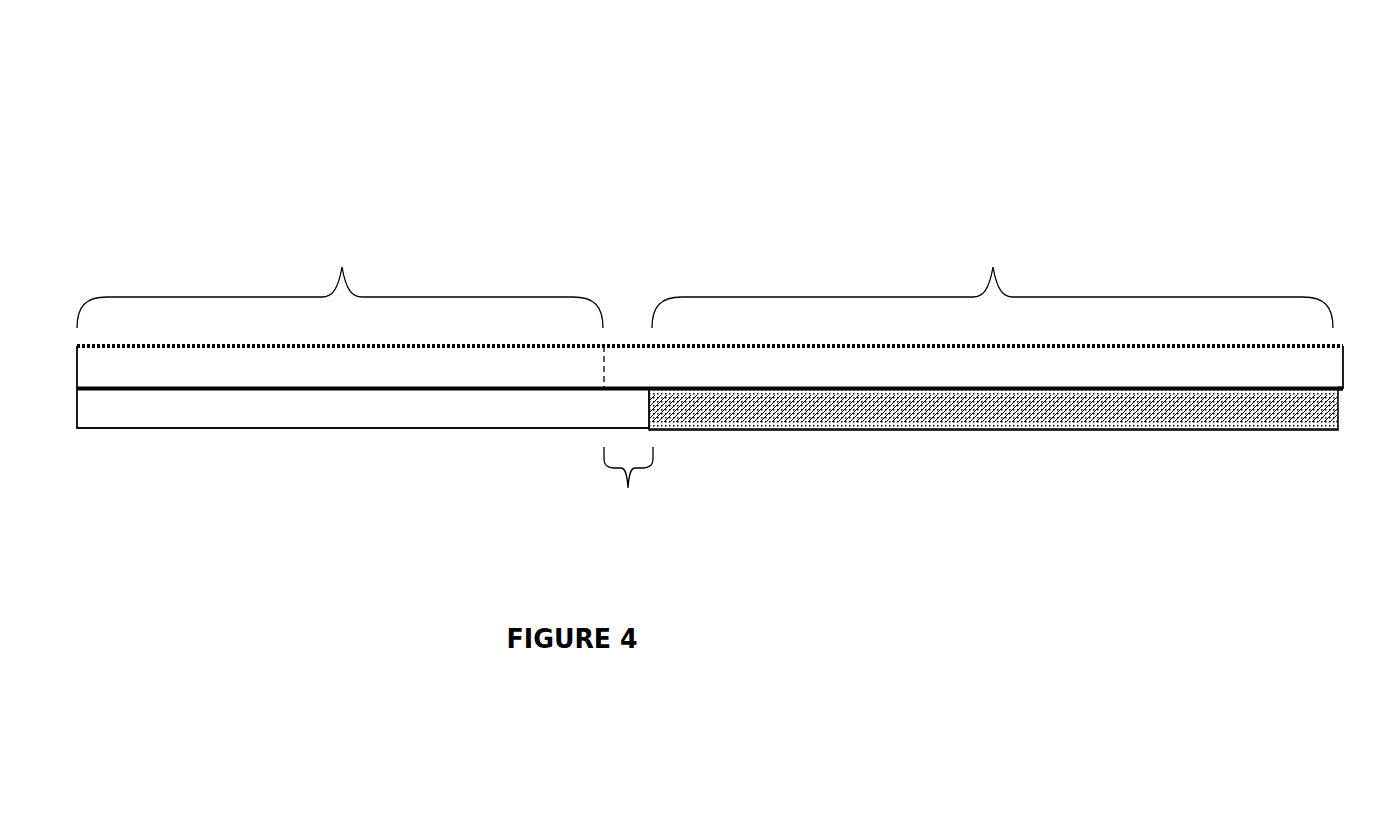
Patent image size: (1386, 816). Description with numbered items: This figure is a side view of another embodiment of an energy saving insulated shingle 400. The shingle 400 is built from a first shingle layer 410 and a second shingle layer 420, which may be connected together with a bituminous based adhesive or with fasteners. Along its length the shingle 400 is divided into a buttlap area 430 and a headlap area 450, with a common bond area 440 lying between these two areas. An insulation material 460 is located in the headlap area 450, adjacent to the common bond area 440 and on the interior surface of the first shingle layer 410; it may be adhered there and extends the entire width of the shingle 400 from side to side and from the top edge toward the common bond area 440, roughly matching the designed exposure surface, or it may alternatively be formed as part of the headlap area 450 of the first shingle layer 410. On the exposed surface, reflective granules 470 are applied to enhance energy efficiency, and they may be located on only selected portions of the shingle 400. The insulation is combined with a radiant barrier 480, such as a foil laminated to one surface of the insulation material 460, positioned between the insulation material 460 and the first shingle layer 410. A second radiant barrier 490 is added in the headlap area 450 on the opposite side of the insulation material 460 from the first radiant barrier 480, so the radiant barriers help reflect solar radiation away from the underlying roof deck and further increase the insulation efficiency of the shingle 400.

The energy saving insulated shingle 400 is at (717, 187).
The first shingle layer 410 is at (158, 367).
The second shingle layer 420 is at (350, 407).
The buttlap area 430 is at (340, 263).
The common bond area 440 is at (620, 489).
The headlap area 450 is at (992, 277).
The insulation material 460 is at (877, 408).
The reflective granules 470 is at (626, 345).
The radiant barrier 480 is at (1343, 393).
The second radiant barrier 490 is at (978, 427).